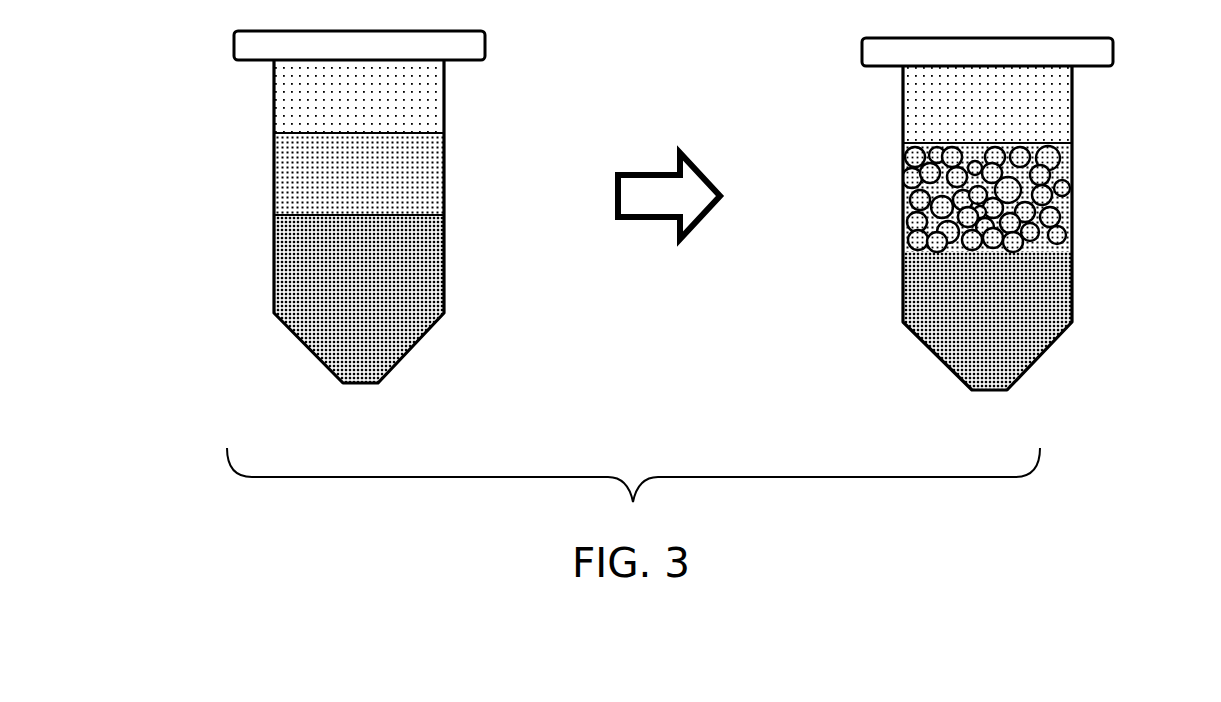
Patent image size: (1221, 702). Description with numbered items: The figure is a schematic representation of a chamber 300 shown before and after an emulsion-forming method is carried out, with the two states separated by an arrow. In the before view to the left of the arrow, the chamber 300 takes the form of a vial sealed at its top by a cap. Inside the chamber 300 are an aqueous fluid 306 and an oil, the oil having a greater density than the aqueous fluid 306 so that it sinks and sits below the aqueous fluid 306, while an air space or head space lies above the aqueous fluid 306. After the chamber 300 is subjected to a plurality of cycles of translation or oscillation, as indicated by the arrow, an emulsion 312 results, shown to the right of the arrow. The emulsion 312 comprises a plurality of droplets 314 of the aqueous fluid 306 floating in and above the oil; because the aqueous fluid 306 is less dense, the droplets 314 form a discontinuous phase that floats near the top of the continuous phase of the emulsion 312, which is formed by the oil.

The chamber 300 is at (363, 193).
The aqueous fluid 306 is at (285, 188).
The emulsion 312 is at (930, 302).
The droplets 314 is at (1073, 160).